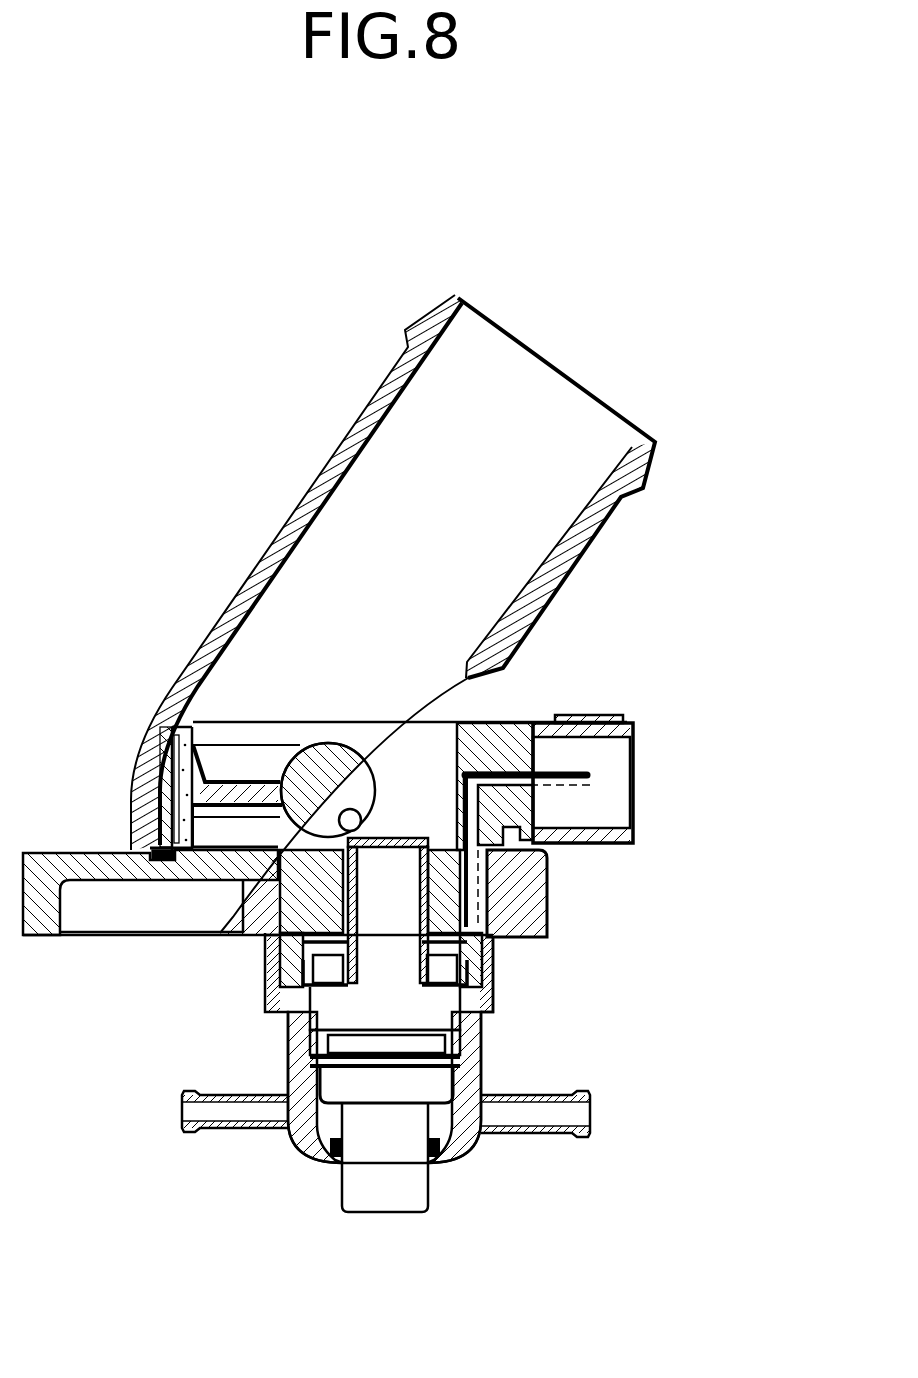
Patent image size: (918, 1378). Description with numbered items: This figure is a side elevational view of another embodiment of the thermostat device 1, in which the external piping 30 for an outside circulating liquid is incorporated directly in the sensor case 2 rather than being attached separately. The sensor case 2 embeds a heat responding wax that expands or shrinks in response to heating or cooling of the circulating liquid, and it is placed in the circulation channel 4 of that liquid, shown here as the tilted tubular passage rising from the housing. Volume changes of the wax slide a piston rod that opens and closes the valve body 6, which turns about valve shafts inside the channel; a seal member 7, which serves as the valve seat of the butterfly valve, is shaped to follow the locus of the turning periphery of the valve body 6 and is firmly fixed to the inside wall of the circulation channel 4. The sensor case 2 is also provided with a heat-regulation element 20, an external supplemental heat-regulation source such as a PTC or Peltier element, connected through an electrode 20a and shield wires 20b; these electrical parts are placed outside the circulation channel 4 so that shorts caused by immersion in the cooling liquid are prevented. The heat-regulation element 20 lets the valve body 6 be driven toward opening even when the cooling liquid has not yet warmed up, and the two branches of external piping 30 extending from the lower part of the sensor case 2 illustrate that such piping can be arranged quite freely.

The thermostat device 1 is at (646, 1146).
The sensor case 2 is at (385, 1200).
The circulation channel 4 is at (590, 547).
The valve body 6 is at (240, 780).
The seal member 7 is at (150, 690).
The heat-regulation element 20 is at (266, 971).
The electrode 20a is at (493, 970).
The shield wire 20b is at (568, 780).
The external piping 30 is at (253, 1133).